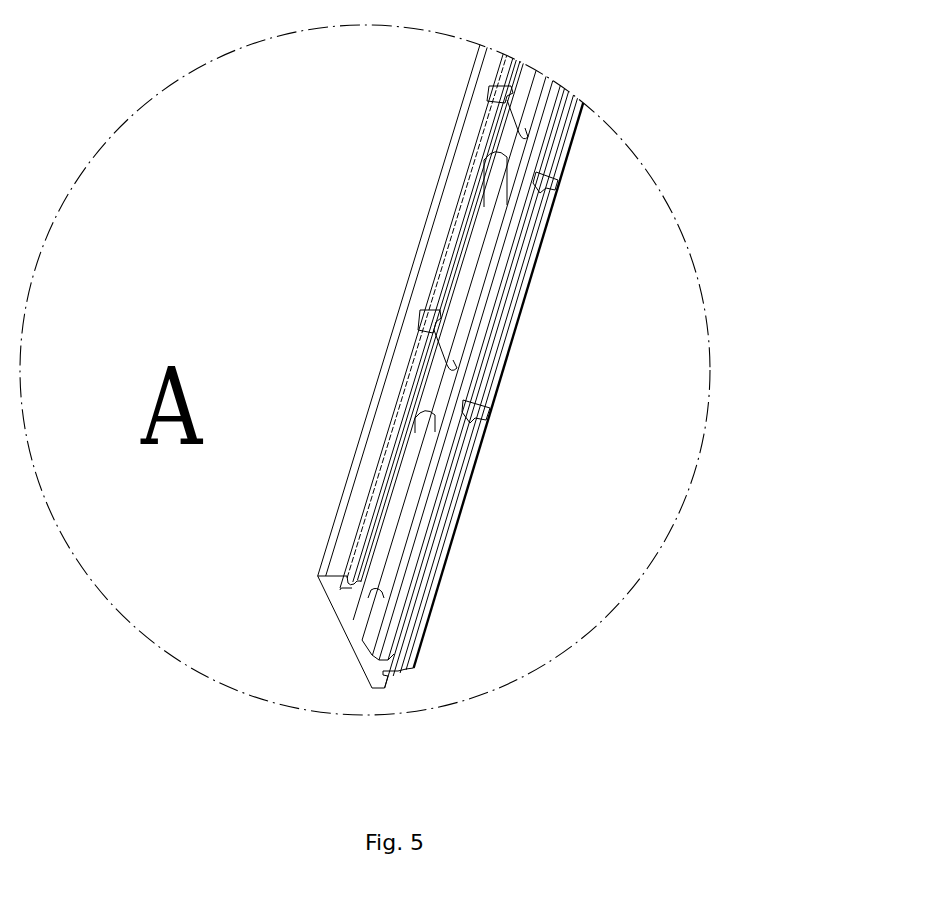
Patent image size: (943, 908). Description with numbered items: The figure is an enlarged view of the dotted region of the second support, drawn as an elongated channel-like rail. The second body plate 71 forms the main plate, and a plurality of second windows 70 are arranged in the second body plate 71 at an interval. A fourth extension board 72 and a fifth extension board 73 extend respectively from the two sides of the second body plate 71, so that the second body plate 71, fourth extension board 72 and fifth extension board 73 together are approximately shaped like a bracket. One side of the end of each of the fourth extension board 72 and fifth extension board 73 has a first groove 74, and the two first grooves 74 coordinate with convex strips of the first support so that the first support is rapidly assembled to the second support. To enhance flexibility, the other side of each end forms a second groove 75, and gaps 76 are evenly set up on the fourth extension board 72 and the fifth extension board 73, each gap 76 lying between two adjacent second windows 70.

The second window 70 is at (400, 462).
The second body plate 71 is at (350, 637).
The fourth extension board 72 is at (334, 580).
The fifth extension board 73 is at (391, 673).
The first groove 74 is at (367, 578).
The second groove 75 is at (351, 578).
The gap 76 is at (503, 93).